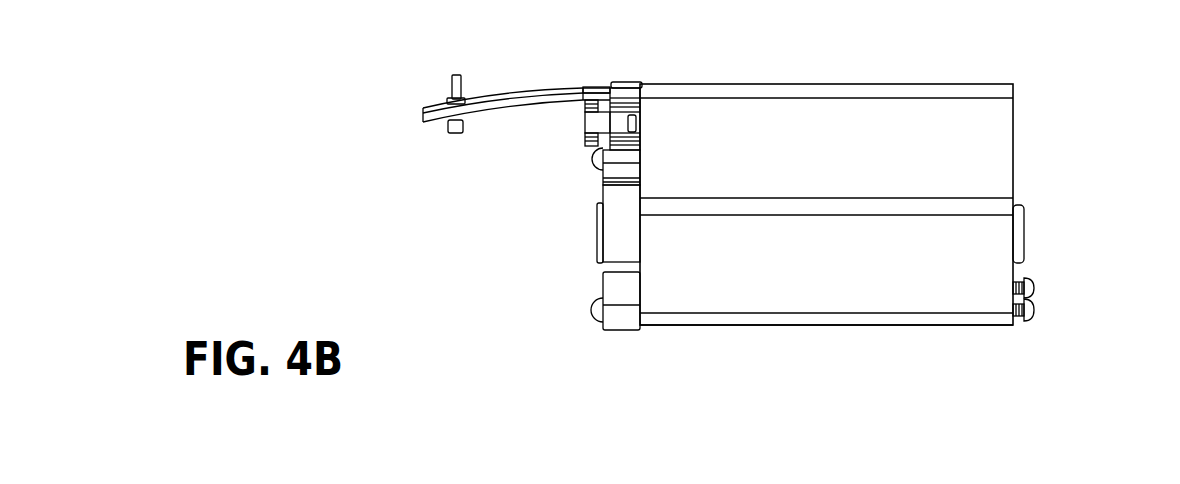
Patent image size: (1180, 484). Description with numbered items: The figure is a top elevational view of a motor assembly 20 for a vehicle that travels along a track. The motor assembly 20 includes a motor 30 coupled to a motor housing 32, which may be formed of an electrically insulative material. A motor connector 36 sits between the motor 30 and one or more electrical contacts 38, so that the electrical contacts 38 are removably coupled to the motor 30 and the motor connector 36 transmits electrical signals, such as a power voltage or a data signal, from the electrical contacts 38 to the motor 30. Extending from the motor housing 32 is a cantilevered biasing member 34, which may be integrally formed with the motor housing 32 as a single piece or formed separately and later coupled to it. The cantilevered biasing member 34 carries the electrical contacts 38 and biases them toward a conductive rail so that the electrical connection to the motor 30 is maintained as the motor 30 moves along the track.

The motor assembly 20 is at (1047, 163).
The motor 30 is at (597, 284).
The motor housing 32 is at (797, 326).
The cantilevered biasing member 34 is at (425, 108).
The motor connector 36 is at (583, 135).
The electrical contacts 38 is at (460, 80).